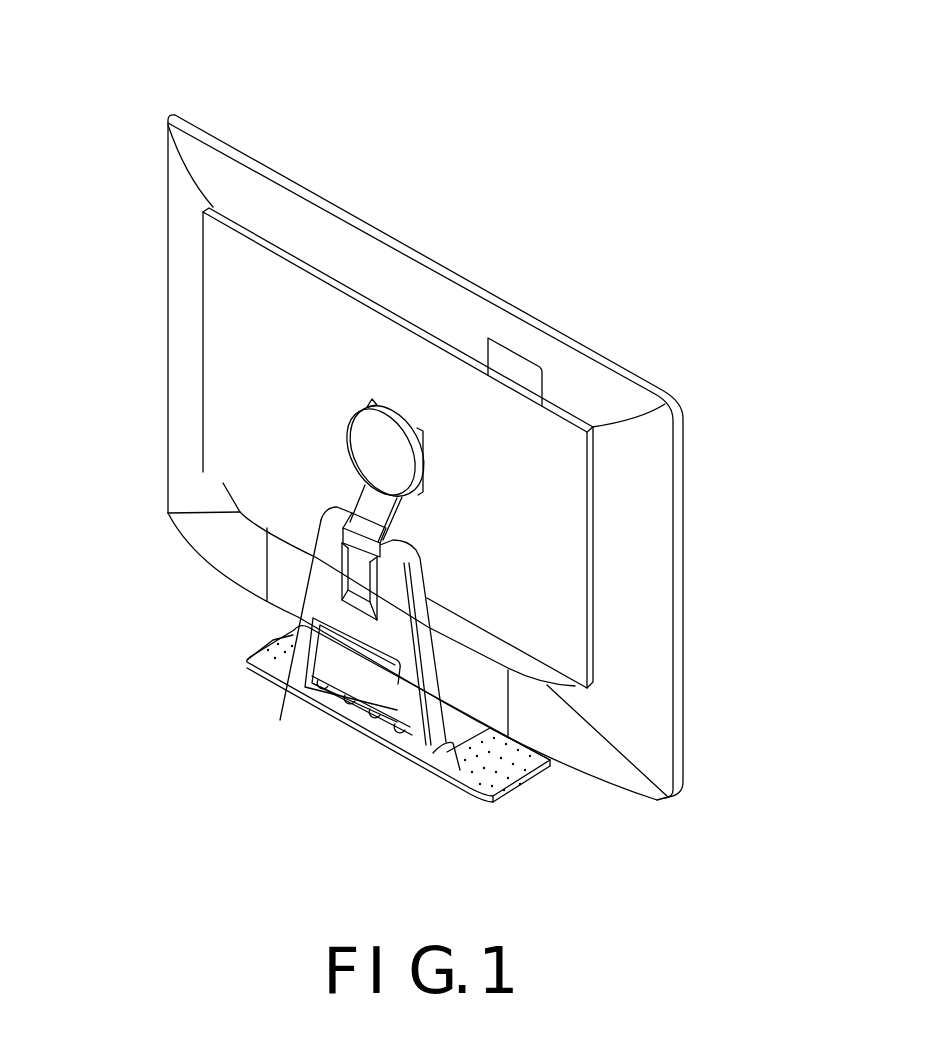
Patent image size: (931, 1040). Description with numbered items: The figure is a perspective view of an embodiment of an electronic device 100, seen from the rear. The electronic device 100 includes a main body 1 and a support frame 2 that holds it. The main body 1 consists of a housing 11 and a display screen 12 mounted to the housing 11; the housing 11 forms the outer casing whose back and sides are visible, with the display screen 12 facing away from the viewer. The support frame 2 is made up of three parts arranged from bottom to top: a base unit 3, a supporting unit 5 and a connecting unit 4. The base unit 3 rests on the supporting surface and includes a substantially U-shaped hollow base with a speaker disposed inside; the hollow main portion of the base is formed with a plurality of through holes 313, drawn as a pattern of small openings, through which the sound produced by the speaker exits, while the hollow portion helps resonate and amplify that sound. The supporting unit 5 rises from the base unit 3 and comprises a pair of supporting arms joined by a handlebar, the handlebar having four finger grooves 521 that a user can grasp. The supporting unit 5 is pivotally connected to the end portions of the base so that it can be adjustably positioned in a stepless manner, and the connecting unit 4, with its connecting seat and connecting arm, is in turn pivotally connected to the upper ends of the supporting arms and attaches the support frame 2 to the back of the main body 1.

The electronic device 100 is at (130, 123).
The main body 1 is at (772, 630).
The housing 11 is at (620, 632).
The display screen 12 is at (683, 540).
The support frame 2 is at (443, 867).
The base unit 3 is at (483, 777).
The through holes 313 is at (502, 763).
The connecting unit 4 is at (376, 455).
The supporting unit 5 is at (332, 605).
The finger grooves 521 is at (350, 700).